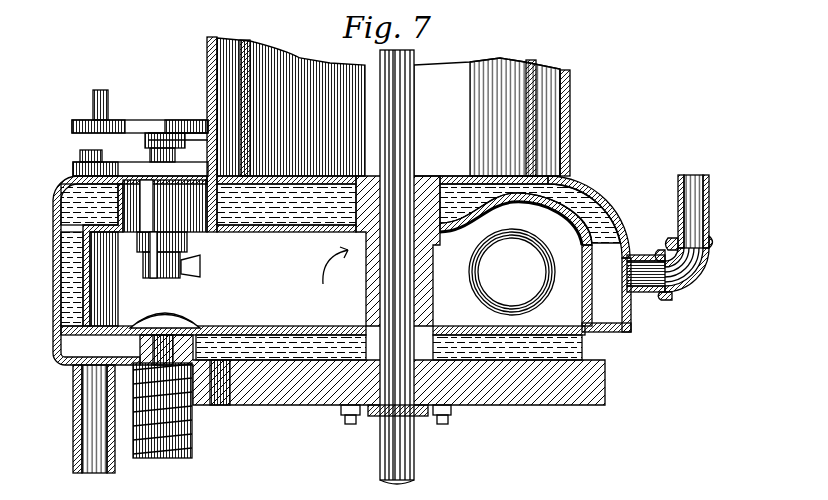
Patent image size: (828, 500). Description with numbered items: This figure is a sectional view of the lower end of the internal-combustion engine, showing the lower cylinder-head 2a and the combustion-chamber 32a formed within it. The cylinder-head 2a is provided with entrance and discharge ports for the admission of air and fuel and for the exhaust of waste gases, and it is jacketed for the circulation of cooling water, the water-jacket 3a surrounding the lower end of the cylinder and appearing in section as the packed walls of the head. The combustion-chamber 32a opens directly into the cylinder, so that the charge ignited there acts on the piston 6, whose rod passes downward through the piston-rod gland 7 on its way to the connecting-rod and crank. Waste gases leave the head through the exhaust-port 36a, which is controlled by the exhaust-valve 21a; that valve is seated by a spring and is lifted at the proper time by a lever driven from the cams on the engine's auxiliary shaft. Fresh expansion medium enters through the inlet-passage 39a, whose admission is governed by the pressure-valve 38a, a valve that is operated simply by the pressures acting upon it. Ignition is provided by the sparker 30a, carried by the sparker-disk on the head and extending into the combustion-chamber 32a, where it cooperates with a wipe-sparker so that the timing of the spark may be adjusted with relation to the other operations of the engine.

The cylinder-head 2a is at (372, 389).
The water-jacket 3a is at (612, 187).
The piston 6 is at (405, 267).
The piston-rod gland 7 is at (375, 413).
The exhaust-valve 21a is at (512, 272).
The sparker 30a is at (184, 243).
The combustion-chamber 32a is at (293, 272).
The exhaust-port 36a is at (688, 237).
The pressure-valve 38a is at (177, 323).
The inlet-passage 39a is at (88, 418).